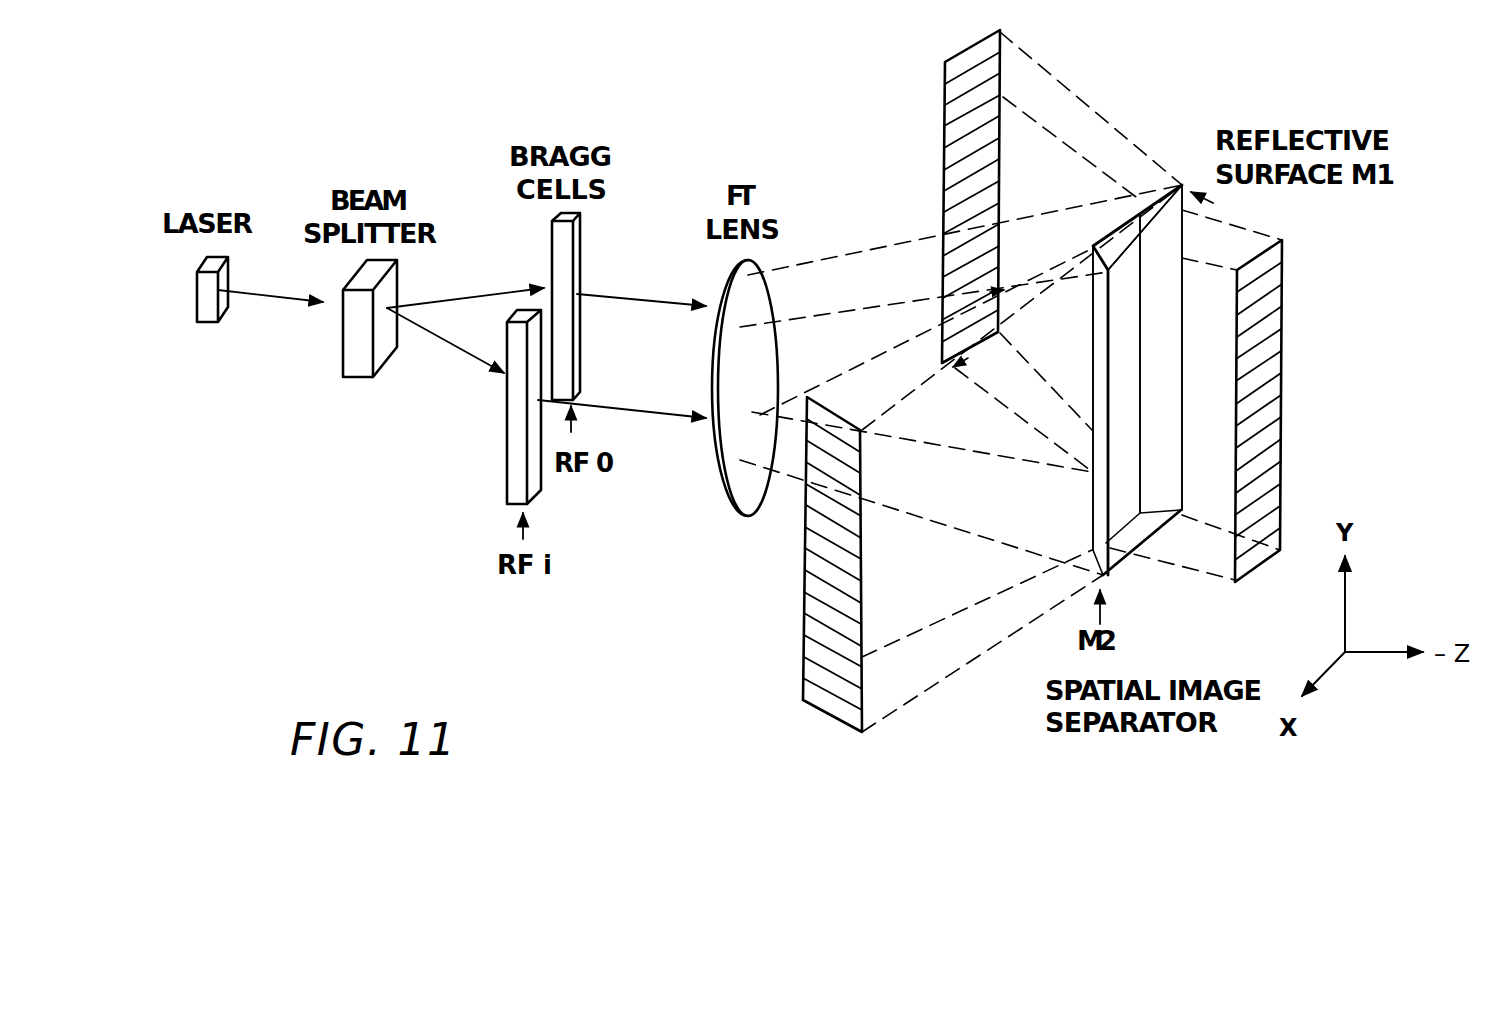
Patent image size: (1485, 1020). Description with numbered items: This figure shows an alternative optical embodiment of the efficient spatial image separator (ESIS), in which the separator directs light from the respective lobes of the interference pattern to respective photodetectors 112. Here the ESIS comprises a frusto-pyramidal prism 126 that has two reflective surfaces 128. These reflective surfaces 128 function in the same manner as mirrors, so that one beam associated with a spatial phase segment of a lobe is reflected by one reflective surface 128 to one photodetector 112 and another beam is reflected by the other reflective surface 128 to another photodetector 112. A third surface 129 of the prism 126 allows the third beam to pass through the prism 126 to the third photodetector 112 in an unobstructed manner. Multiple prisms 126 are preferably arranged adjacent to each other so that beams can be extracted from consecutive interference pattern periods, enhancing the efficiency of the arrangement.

The photodetector 112 is at (945, 80).
The frusto-pyramidal prism 126 is at (1110, 396).
The reflective surface 128 is at (1160, 434).
The third surface 129 is at (1105, 230).